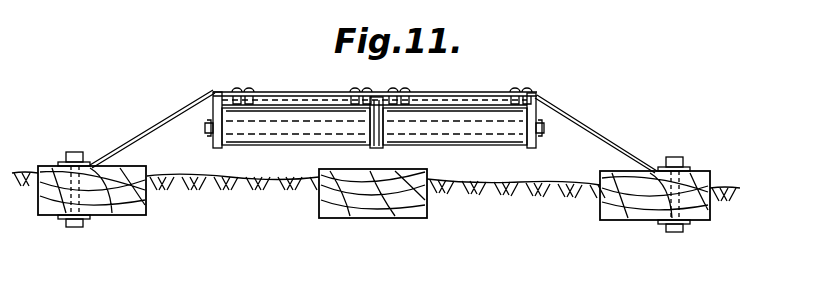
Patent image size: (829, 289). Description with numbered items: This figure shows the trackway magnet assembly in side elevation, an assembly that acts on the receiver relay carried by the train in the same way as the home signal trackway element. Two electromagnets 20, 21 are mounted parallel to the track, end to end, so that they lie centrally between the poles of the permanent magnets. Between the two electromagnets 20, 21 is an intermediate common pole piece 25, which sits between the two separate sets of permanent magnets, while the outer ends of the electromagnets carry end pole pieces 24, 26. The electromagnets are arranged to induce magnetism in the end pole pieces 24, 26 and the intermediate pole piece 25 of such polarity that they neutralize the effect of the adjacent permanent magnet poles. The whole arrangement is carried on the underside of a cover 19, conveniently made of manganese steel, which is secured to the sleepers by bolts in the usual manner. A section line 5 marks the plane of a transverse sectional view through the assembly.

The section line 5- 5 is at (318, 62).
The cover 19 is at (626, 131).
The electromagnet 20 is at (311, 145).
The electromagnet 21 is at (432, 140).
The end pole piece 24 is at (215, 147).
The intermediate common pole piece 25 is at (377, 146).
The end pole piece 26 is at (536, 148).